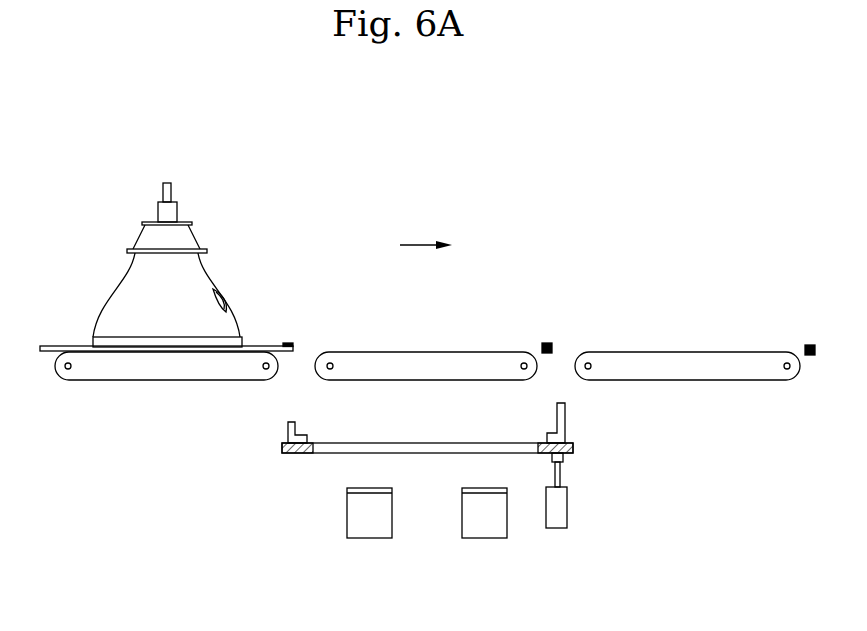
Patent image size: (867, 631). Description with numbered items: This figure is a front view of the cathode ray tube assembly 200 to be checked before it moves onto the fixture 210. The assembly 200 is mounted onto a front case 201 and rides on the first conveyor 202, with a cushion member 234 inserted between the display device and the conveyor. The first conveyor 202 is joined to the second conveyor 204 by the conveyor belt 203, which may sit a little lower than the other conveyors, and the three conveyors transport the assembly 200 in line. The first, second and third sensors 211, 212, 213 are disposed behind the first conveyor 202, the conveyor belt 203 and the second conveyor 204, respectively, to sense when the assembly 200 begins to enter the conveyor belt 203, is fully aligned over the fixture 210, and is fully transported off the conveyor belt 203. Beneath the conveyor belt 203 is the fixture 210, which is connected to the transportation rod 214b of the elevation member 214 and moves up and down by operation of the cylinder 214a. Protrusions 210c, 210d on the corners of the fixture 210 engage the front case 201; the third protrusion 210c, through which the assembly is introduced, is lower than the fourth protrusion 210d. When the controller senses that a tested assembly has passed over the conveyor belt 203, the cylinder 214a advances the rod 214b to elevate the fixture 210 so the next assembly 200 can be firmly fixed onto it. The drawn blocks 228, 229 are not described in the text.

The cathode ray tube assembly 200 is at (202, 285).
The front case 201 is at (128, 342).
The first conveyor 202 is at (100, 372).
The conveyor belt 203 is at (398, 358).
The second conveyor 204 is at (755, 373).
The fixture 210 is at (298, 453).
The third protrusion 210c is at (285, 432).
The fourth protrusion 210d is at (565, 422).
The first sensor 211 is at (287, 343).
The second sensor 212 is at (547, 343).
The third sensor 213 is at (810, 345).
The elevation member 214 is at (585, 510).
The cylinder 214a is at (557, 528).
The transportation rod 214b is at (560, 473).
The block 228 is at (370, 540).
The block 229 is at (482, 540).
The cushion member 234 is at (55, 345).